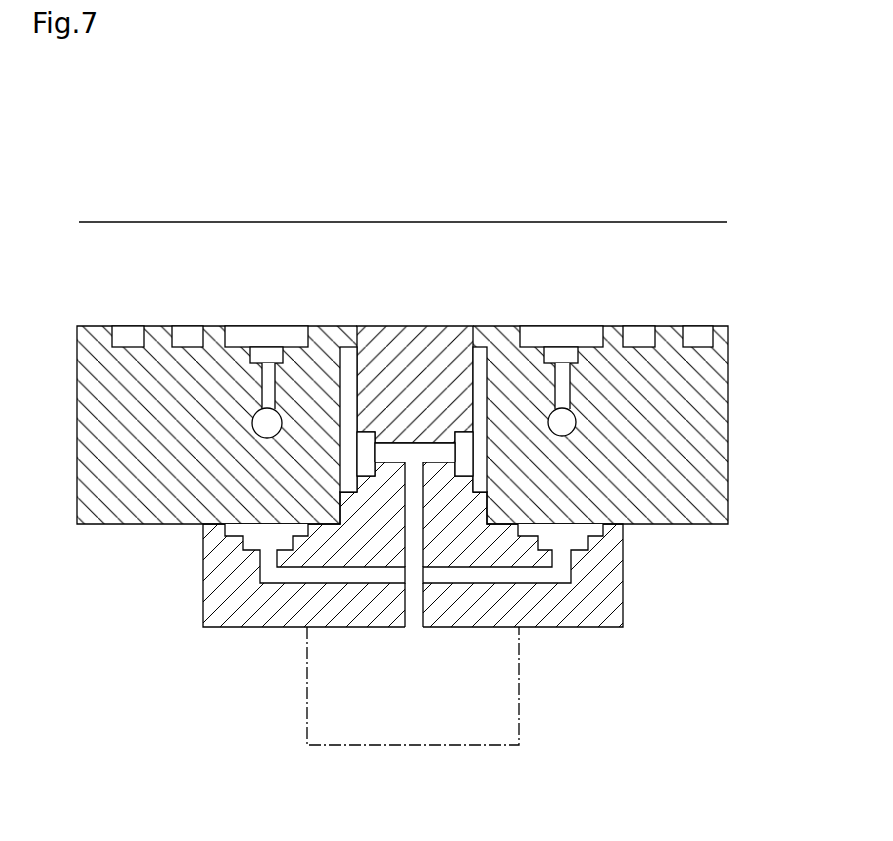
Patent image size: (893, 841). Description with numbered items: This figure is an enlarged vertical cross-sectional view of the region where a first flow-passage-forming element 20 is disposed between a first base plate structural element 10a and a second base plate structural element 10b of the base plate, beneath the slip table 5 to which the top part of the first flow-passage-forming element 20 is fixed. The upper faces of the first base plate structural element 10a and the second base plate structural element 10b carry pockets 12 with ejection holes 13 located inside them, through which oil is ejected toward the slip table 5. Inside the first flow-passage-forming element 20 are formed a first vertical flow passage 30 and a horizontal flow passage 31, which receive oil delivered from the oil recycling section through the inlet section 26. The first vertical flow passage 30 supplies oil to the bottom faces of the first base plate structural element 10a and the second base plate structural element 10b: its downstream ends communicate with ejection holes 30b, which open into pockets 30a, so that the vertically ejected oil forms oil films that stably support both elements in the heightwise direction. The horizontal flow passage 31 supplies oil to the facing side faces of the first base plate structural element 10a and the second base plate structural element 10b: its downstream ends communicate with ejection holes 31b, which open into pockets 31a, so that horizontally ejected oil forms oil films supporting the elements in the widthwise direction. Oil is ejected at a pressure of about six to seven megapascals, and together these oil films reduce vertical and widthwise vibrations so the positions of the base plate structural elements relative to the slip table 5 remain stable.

The slip table 5 is at (492, 242).
The first base plate structural element 10a is at (105, 482).
The second base plate structural element 10b is at (698, 495).
The pocket 12 is at (290, 333).
The ejection hole 13 is at (265, 350).
The first flow-passage-forming element 20 is at (231, 617).
The inlet section 26 is at (489, 723).
The first vertical flow passage 30 is at (407, 613).
The pocket 30a is at (235, 530).
The ejection hole 30b is at (250, 543).
The horizontal flow passage 31 is at (413, 450).
The pocket 31a is at (345, 355).
The ejection hole 31b is at (372, 430).